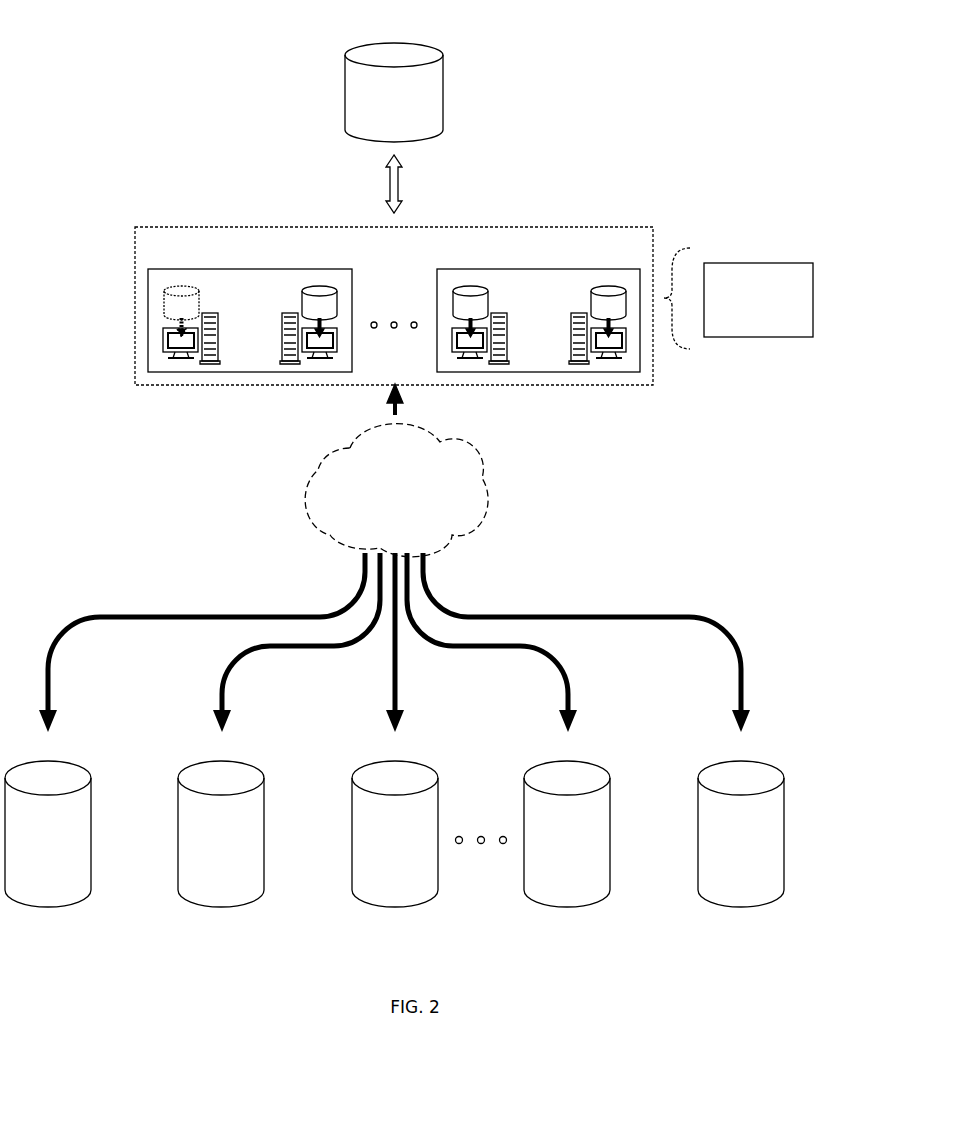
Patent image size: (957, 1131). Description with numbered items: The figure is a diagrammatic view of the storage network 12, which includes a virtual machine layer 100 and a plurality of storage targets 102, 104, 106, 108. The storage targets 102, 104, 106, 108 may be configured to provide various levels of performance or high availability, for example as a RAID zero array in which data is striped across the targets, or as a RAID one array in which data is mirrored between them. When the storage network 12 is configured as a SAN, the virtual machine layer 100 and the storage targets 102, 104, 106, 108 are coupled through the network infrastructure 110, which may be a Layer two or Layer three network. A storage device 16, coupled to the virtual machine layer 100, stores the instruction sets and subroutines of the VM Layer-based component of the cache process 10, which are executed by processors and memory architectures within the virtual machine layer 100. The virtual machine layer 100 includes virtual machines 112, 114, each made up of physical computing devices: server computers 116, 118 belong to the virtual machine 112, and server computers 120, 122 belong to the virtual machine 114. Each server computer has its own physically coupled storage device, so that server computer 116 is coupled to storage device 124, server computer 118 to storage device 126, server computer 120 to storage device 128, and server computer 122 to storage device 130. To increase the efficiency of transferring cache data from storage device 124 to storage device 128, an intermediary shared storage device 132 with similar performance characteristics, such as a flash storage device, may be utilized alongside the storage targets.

The storage network 12 is at (34, 35).
The storage device 16 is at (394, 92).
The virtual machine layer 100 is at (394, 306).
The virtual machine 112 is at (250, 320).
The virtual machine 114 is at (538, 320).
The server computer 116 is at (219, 345).
The server computer 118 is at (281, 345).
The server computer 120 is at (508, 345).
The server computer 122 is at (570, 345).
The storage device 124 is at (181, 311).
The storage device 126 is at (319, 311).
The storage device 128 is at (470, 311).
The storage device 130 is at (608, 311).
The cache process 10 is at (813, 291).
The network infrastructure 110 is at (396, 490).
The storage target 102 is at (94, 818).
The storage target 104 is at (267, 818).
The storage target 106 is at (352, 818).
The storage target 108 is at (524, 818).
The shared storage device 132 is at (698, 818).